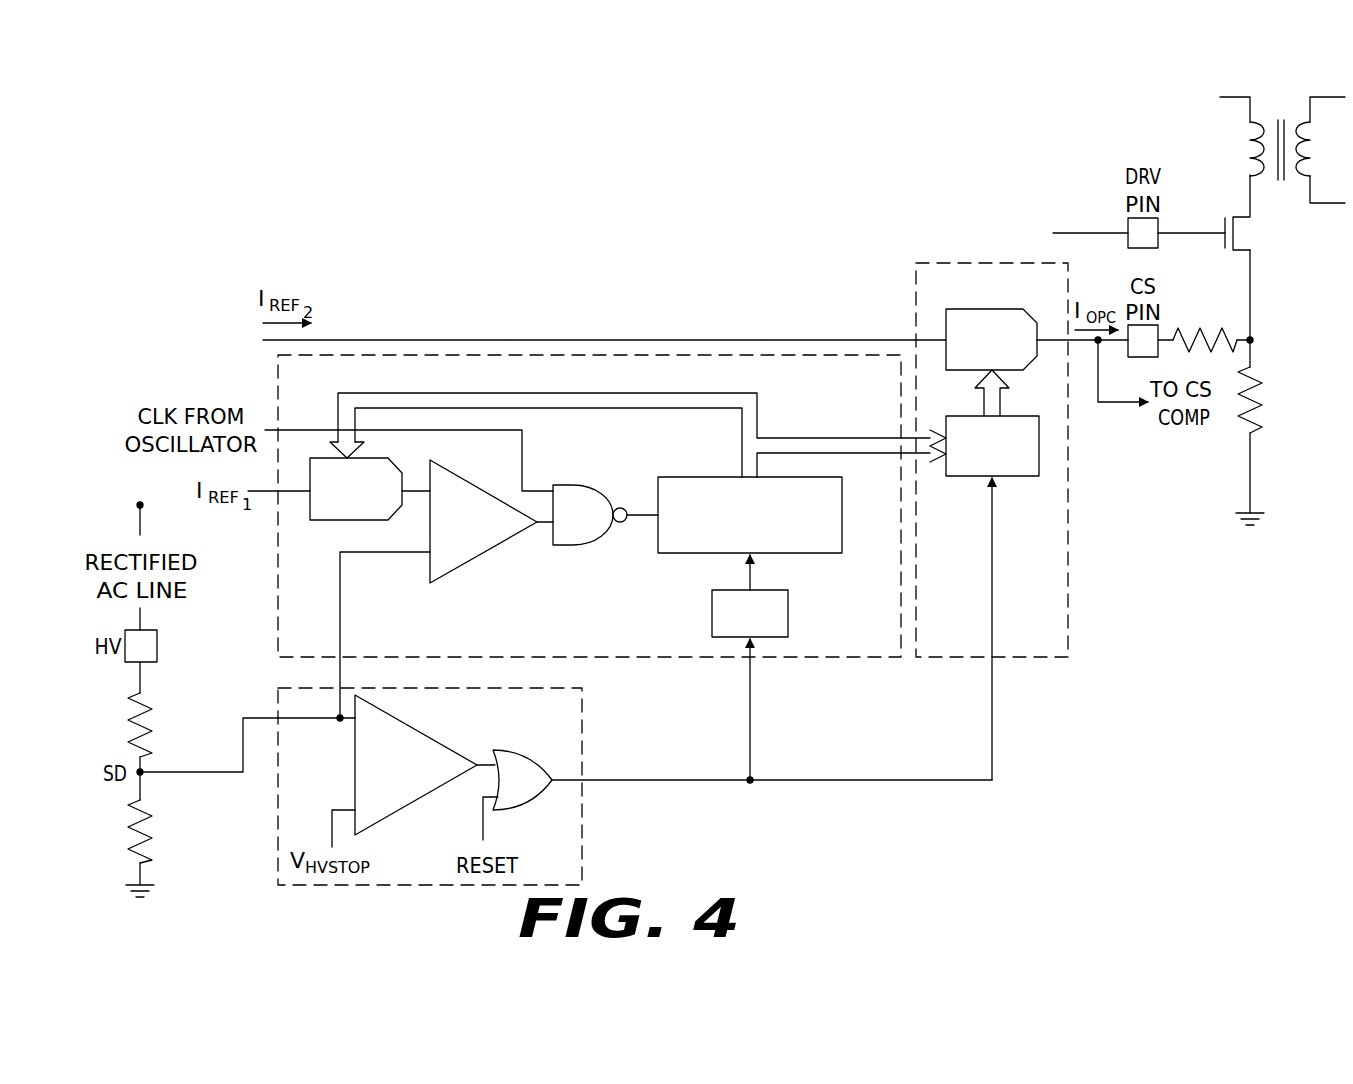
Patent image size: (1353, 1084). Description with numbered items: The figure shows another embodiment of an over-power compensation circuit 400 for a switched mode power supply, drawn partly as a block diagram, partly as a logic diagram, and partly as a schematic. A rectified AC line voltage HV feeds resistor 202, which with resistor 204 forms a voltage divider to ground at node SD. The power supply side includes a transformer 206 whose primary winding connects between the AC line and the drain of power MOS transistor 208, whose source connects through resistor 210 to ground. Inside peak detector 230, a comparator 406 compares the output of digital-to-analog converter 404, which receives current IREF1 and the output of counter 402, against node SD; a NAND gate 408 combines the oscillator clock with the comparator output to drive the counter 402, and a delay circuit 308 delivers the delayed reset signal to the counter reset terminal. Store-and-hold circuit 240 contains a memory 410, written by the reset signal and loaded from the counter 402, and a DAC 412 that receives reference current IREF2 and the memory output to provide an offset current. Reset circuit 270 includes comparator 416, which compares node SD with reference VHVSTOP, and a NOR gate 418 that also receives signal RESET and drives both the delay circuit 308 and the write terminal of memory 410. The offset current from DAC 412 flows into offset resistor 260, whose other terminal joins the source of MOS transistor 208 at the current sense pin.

The over-power compensation circuit 400 is at (331, 199).
The resistor 202 is at (138, 696).
The resistor 204 is at (138, 838).
The transformer 206 is at (1265, 90).
The power MOS transistor 208 is at (1264, 230).
The resistor 210 is at (1262, 402).
The peak detector 230 is at (278, 388).
The store-and-hold circuit 240 is at (948, 263).
The offset resistor 260 is at (1192, 332).
The reset circuit 270 is at (590, 740).
The delay circuit 308 is at (712, 606).
The counter 402 is at (702, 477).
The digital-to-analog converter 404 is at (340, 521).
The comparator 406 is at (482, 555).
The NAND gate 408 is at (575, 485).
The memory 410 is at (1002, 412).
The DAC 412 is at (1005, 309).
The comparator 416 is at (418, 736).
The NOR gate 418 is at (505, 750).